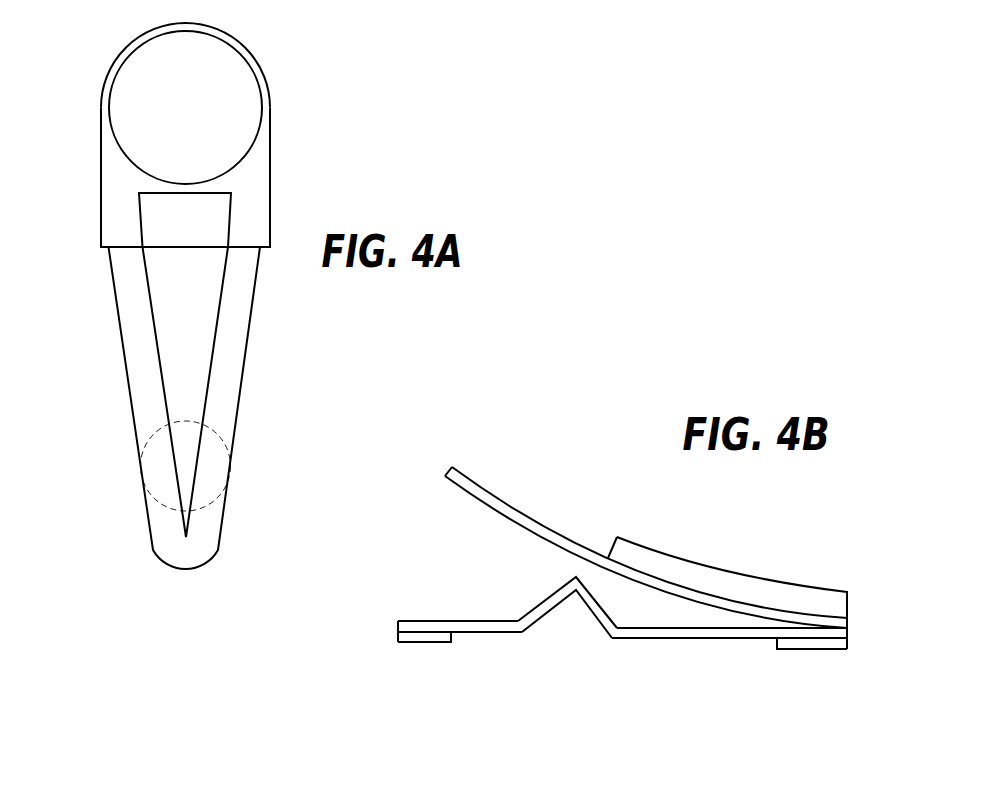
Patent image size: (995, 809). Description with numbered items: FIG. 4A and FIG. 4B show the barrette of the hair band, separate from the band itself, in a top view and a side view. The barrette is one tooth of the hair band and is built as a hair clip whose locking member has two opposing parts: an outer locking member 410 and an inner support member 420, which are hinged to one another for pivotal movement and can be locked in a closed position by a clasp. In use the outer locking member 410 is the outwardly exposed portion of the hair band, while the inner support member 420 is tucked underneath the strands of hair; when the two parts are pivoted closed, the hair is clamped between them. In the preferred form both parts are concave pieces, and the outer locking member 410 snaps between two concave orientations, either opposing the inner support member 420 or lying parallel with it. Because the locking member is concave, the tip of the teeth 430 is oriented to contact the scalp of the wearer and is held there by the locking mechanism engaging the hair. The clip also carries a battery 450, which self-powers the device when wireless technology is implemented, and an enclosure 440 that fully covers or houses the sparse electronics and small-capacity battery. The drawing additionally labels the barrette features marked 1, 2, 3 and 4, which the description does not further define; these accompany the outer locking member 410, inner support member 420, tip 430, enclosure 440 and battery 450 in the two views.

In FIG. 4A, the contact pin 1 is at (233, 387).
In FIG. 4B, the contact pin 1 is at (466, 483).
In FIG. 4A, the connector device 2 is at (284, 65).
In FIG. 4B, the connector device 2 is at (837, 667).
In FIG. 4A, the end wall 3 is at (75, 96).
In FIG. 4B, the end wall 3 is at (882, 555).
In FIG. 4A, the tip region 4 is at (155, 458).
In FIG. 4A, the outer locking member 410 is at (274, 516).
In FIG. 4B, the outer locking member 410 is at (530, 486).
In FIG. 4B, the inner support member 420 is at (627, 658).
In FIG. 4B, the tip of the teeth 430 is at (419, 658).
In FIG. 4A, the enclosure 440 is at (306, 132).
In FIG. 4B, the enclosure 440 is at (763, 558).
In FIG. 4B, the battery 450 is at (786, 665).